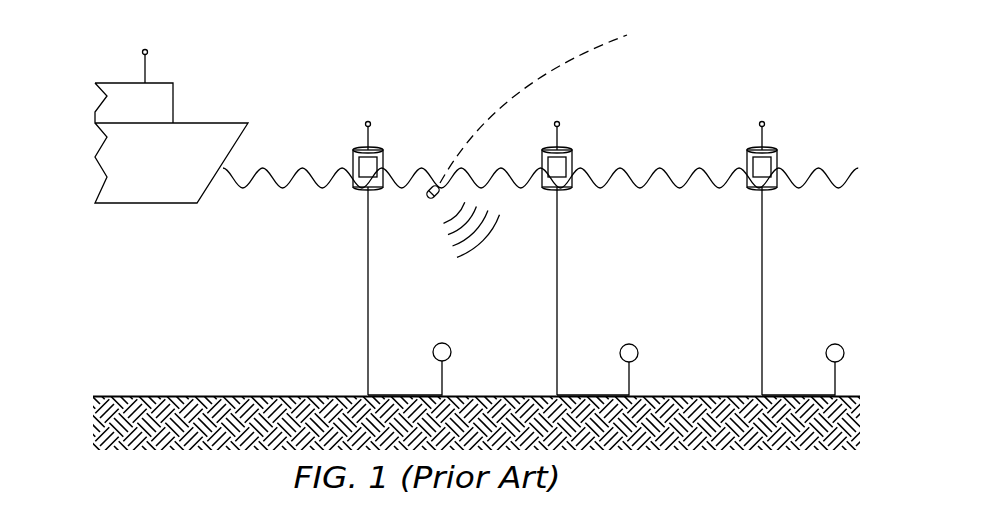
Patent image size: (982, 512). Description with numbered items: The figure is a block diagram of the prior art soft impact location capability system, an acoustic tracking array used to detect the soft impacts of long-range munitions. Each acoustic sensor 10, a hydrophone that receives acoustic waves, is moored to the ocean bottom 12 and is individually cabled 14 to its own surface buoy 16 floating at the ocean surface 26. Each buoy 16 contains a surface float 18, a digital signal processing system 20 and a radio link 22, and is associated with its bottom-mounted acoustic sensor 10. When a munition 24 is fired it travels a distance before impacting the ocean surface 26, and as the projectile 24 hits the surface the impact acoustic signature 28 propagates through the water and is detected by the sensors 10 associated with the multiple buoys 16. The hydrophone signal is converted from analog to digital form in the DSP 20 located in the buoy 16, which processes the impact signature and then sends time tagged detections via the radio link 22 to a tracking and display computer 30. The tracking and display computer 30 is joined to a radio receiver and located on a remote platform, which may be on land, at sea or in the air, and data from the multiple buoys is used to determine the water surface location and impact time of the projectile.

The acoustic sensor 10 is at (448, 343).
The ocean bottom 12 is at (312, 395).
The cable 14 is at (368, 295).
The surface buoy 16 is at (523, 130).
The surface float 18 is at (385, 162).
The digital signal processing system 20 is at (362, 160).
The radio link 22 is at (372, 133).
The long-range munition 24 is at (430, 201).
The ocean surface 26 is at (648, 182).
The impact acoustic signature 28 is at (483, 240).
The tracking and display computer 30 is at (173, 95).